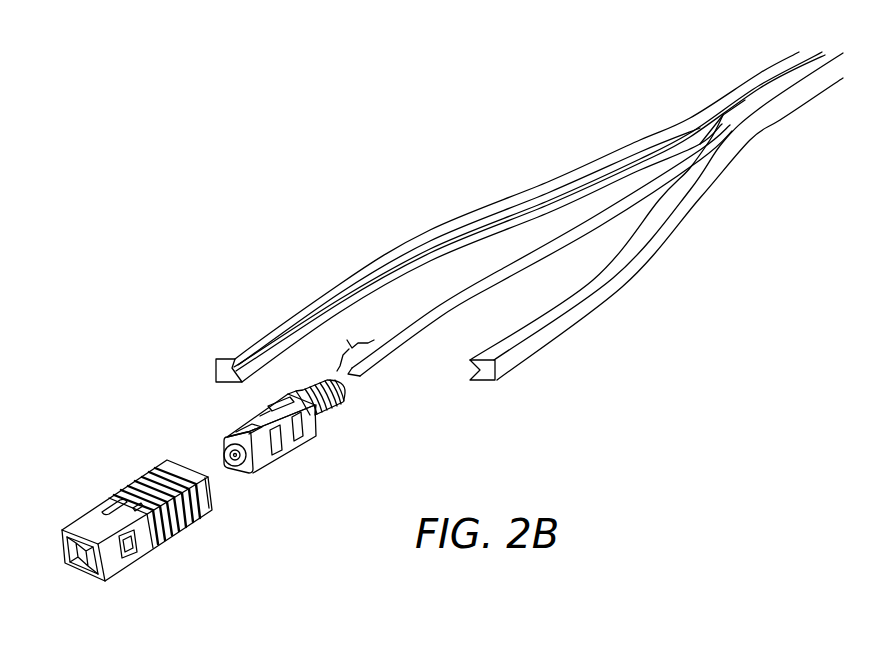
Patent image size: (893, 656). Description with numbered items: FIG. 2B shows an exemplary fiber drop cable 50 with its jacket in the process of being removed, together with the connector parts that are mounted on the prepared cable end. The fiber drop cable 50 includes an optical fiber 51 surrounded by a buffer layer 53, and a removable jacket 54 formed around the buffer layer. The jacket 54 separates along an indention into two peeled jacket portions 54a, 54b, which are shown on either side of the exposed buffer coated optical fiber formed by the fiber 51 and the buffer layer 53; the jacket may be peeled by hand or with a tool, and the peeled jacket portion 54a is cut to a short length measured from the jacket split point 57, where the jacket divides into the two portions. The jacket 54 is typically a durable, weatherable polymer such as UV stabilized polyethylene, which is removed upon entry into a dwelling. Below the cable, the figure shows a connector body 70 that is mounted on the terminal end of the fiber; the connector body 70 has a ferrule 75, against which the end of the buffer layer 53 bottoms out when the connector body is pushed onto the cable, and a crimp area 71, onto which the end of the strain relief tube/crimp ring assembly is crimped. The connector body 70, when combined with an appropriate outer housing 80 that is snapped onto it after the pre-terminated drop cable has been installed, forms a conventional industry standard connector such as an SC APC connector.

The fiber drop cable 50 is at (646, 101).
The optical fiber 51 is at (347, 340).
The buffer layer 53 is at (413, 332).
The removable jacket 54 is at (773, 75).
The peeled jacket portion 54a is at (340, 283).
The peeled jacket portion 54b is at (623, 287).
The jacket split point 57 is at (723, 112).
The connector body 70 is at (301, 449).
The crimp area 71 is at (341, 408).
The ferrule 75 is at (250, 467).
The outer housing 80 is at (135, 484).